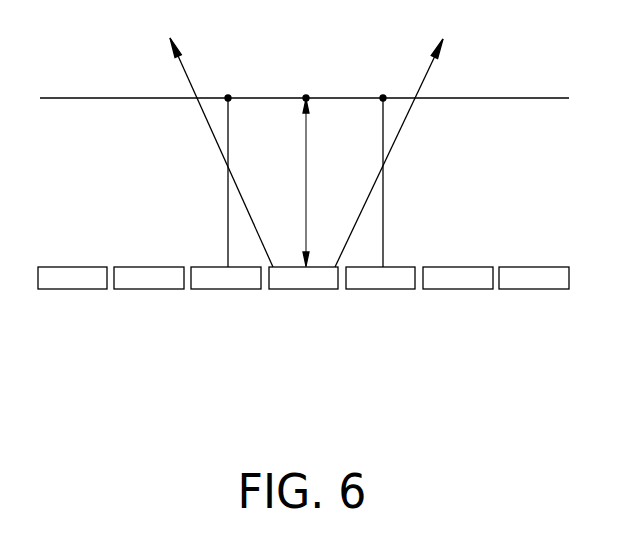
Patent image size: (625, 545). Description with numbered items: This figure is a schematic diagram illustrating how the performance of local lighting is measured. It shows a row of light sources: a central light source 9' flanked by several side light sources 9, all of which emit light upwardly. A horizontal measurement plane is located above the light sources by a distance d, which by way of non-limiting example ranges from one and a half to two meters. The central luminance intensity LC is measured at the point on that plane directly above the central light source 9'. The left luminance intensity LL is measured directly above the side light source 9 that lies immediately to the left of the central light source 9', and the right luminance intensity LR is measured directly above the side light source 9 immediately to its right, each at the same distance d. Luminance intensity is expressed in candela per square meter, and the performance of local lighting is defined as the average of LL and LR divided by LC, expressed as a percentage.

The side light sources 9 is at (303, 333).
The central light source 9' is at (303, 325).
The distance d is at (295, 182).
The left luminance intensity LL is at (231, 161).
The central luminance intensity LC is at (307, 78).
The right luminance intensity LR is at (381, 161).